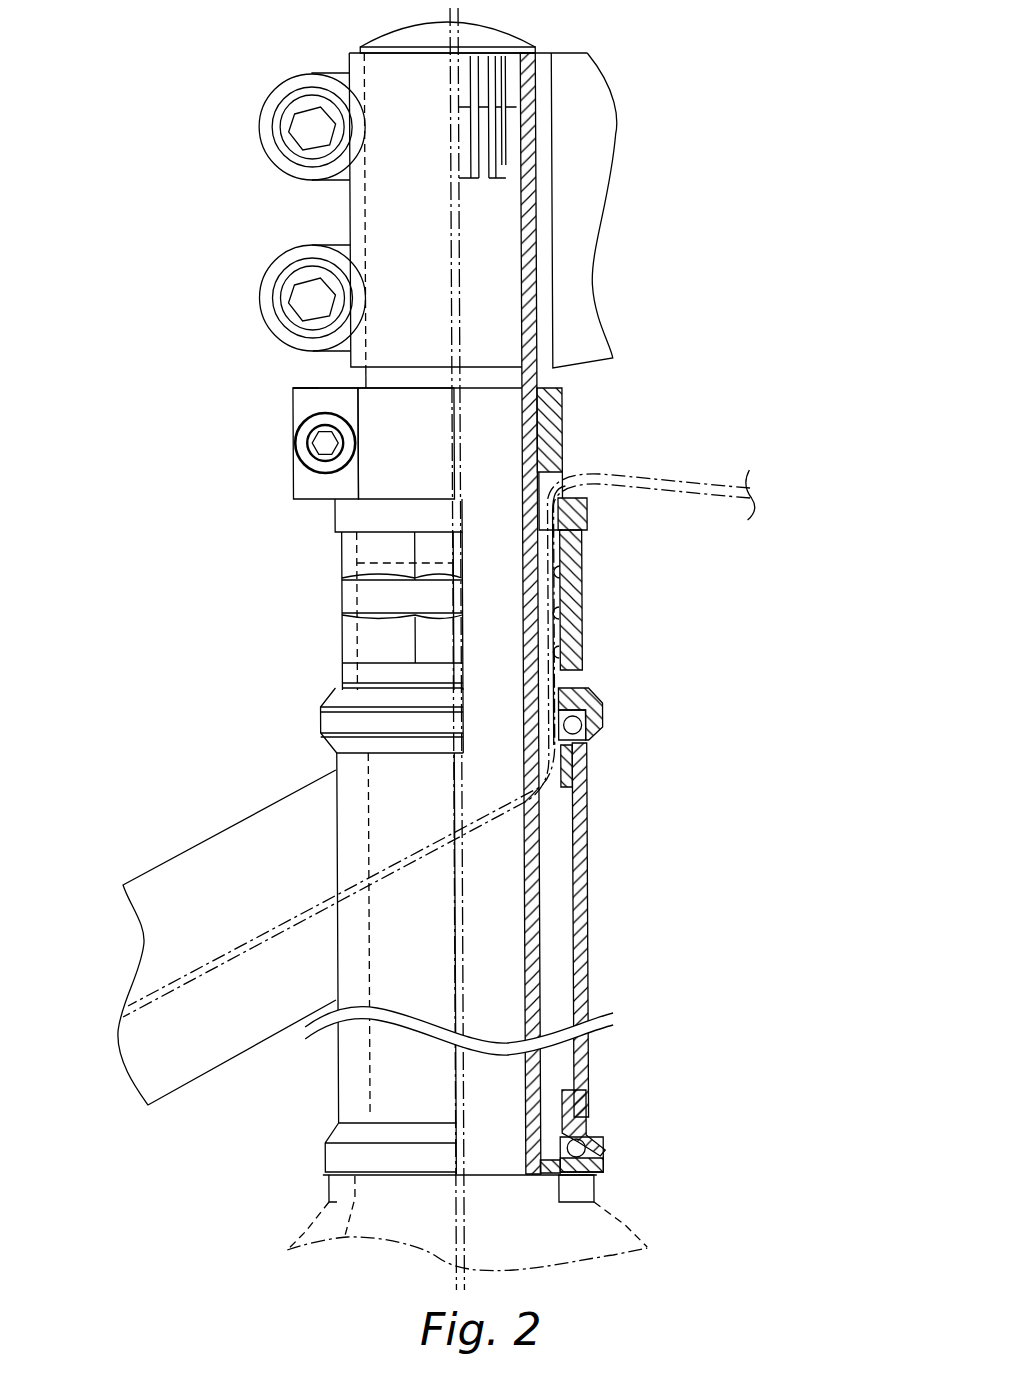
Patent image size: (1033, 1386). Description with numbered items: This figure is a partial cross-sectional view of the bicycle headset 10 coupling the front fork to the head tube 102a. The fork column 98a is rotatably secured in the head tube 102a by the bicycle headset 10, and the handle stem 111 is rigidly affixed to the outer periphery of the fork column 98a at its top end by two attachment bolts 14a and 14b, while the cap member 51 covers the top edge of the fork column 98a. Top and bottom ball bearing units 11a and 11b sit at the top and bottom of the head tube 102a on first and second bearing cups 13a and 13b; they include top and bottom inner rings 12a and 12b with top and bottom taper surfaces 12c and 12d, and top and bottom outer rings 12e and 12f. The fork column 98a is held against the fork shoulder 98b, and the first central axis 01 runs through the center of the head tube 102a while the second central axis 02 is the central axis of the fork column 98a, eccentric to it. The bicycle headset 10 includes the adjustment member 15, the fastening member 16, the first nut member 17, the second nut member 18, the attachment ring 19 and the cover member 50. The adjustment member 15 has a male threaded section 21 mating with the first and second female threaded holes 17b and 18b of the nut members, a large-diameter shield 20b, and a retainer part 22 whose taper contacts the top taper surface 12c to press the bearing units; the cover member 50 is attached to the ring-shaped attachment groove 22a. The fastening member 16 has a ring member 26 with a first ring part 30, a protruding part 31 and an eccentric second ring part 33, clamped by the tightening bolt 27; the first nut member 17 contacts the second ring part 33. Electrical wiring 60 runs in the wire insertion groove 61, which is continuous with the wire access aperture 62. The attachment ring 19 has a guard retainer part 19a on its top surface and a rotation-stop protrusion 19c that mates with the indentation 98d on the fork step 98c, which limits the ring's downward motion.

The cap member 51 is at (510, 38).
The second central axis 02 is at (458, 258).
The first central axis 01 is at (462, 400).
The handle stem 111 is at (569, 250).
The attachment bolt 14a is at (298, 108).
The attachment bolt 14b is at (297, 278).
The protruding part 31 is at (304, 397).
The tightening bolt 27 is at (313, 428).
The fastening member 16 is at (318, 484).
The first nut member 17 is at (351, 555).
The second nut member 18 is at (354, 640).
The large-diameter shield 20b is at (354, 675).
The cover member 50 is at (346, 697).
The head tube 102a is at (393, 832).
The ring member 26 is at (567, 399).
The bicycle headset 10 is at (597, 431).
The first ring part 30 is at (556, 458).
The electrical wiring 60 is at (711, 483).
The wire access aperture 62 is at (566, 490).
The second ring part 33 is at (578, 518).
The first female threaded hole 17b is at (580, 577).
The male threaded section 21 is at (578, 585).
The wire insertion groove 61 is at (567, 625).
The second female threaded hole 18b is at (577, 653).
The adjustment member 15 is at (580, 683).
The retainer part 22 is at (567, 710).
The ring-shaped attachment groove 22a is at (583, 683).
The top taper surface 12c is at (556, 718).
The top ball bearing unit 11a is at (586, 722).
The top outer ring 12e is at (596, 741).
The top inner ring 12a is at (557, 742).
The first bearing cup 13a is at (600, 742).
The fork column 98a is at (539, 927).
The fork step 98c is at (360, 1170).
The attachment ring 19 is at (587, 1190).
The rotation-stop protrusion 19c is at (332, 1184).
The indentation 98d is at (344, 1240).
The fork shoulder 98b is at (588, 1185).
The bottom inner ring 12b is at (550, 1137).
The bottom ball bearing unit 11b is at (587, 1152).
The bottom outer ring 12f is at (662, 1114).
The second bearing cup 13b is at (597, 1147).
The guard retainer part 19a is at (530, 1177).
The bottom taper surface 12d is at (562, 1177).